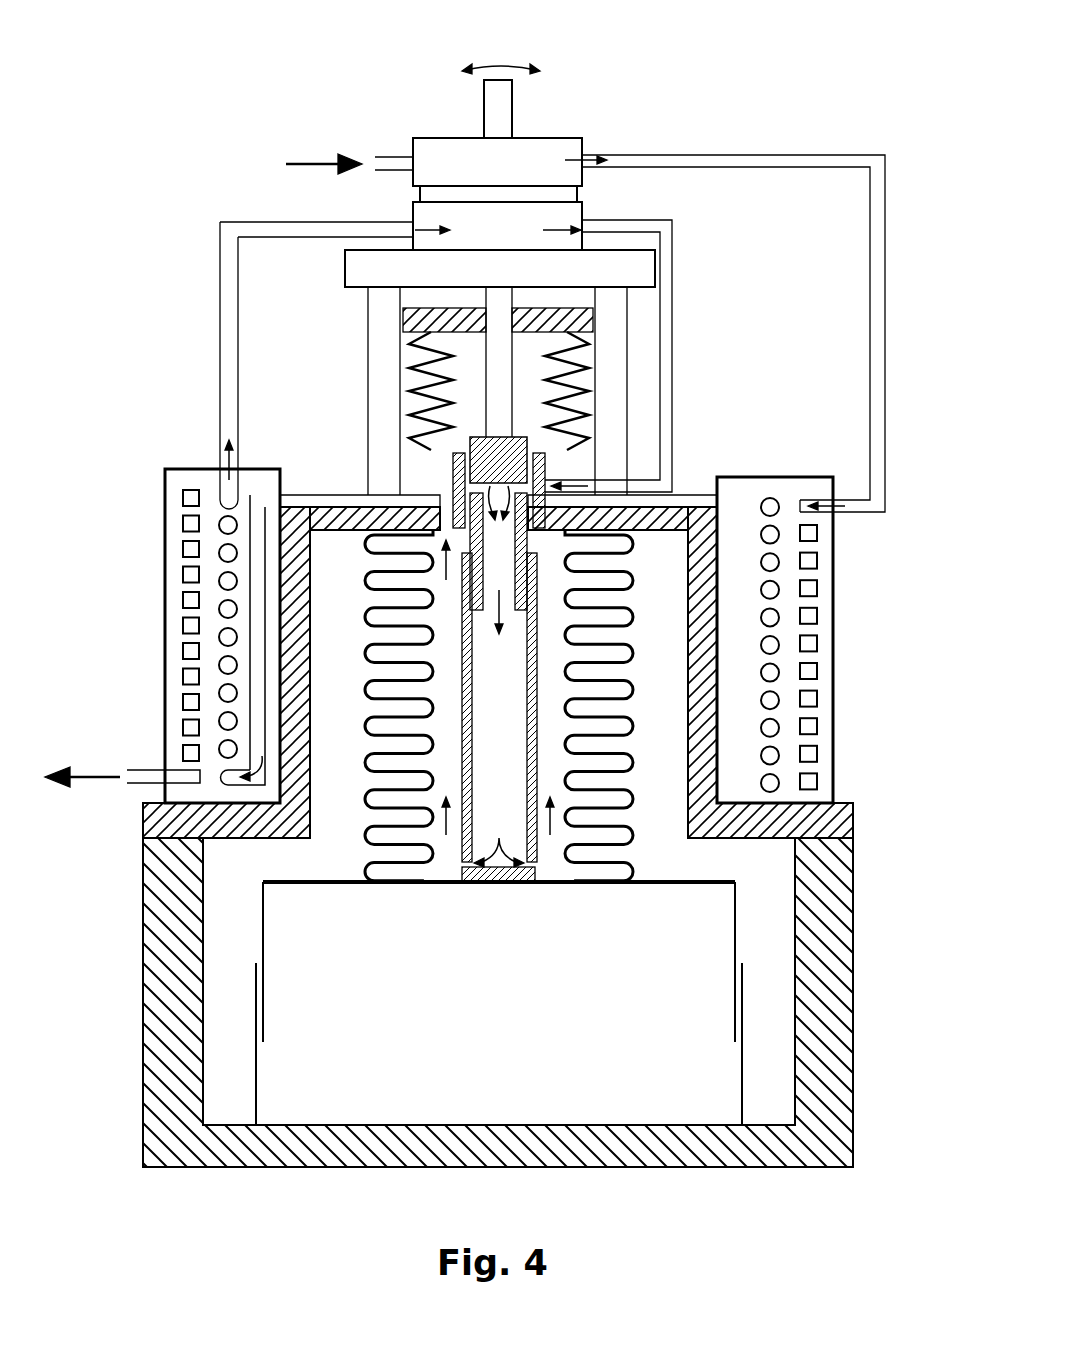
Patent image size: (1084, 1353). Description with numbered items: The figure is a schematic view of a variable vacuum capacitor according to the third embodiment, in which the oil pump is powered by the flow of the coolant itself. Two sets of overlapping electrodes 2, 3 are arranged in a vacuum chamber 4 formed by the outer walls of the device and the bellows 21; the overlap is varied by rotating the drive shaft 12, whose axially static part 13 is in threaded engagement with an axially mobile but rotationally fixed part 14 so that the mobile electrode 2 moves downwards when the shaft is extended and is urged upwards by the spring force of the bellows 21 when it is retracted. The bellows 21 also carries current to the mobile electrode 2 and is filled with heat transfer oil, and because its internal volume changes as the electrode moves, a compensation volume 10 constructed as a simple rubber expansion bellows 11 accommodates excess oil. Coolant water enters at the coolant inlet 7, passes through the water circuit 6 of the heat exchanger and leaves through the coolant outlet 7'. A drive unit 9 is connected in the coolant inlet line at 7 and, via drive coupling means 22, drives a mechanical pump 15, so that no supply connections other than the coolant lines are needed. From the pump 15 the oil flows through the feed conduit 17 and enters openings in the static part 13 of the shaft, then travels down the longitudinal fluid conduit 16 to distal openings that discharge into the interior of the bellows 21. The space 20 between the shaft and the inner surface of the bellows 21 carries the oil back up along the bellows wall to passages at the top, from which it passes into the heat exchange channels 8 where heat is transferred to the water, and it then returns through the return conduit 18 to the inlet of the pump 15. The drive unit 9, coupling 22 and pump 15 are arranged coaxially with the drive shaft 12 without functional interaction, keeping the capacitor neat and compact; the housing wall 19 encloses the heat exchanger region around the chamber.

The mobile electrode 2 is at (263, 928).
The electrode 3 is at (255, 1087).
The vacuum chamber 4 is at (327, 653).
The water circuit 6 is at (185, 523).
The coolant inlet 7 is at (342, 126).
The coolant outlet 7' is at (122, 740).
The heat exchange channels 8 is at (218, 583).
The drive unit 9 is at (456, 155).
The compensation volume 10 is at (467, 360).
The expansion bellows 11 is at (587, 378).
The drive shaft 12 is at (503, 103).
The axially static part of the shaft 13 is at (545, 462).
The axially mobile part of the shaft 14 is at (533, 680).
The pump 15 is at (540, 213).
The longitudinal fluid conduit 16 is at (495, 770).
The feed conduit 17 is at (668, 340).
The return conduit 18 is at (227, 418).
The chamber wall 19 is at (322, 495).
The space between shaft and bellows 20 is at (552, 727).
The bellows 21 is at (630, 568).
The drive coupling means 22 is at (442, 193).